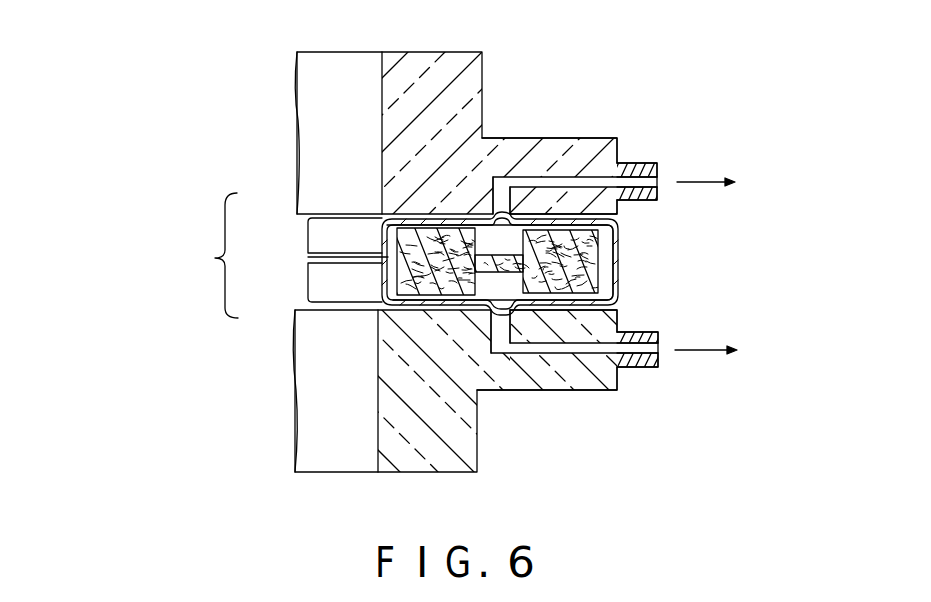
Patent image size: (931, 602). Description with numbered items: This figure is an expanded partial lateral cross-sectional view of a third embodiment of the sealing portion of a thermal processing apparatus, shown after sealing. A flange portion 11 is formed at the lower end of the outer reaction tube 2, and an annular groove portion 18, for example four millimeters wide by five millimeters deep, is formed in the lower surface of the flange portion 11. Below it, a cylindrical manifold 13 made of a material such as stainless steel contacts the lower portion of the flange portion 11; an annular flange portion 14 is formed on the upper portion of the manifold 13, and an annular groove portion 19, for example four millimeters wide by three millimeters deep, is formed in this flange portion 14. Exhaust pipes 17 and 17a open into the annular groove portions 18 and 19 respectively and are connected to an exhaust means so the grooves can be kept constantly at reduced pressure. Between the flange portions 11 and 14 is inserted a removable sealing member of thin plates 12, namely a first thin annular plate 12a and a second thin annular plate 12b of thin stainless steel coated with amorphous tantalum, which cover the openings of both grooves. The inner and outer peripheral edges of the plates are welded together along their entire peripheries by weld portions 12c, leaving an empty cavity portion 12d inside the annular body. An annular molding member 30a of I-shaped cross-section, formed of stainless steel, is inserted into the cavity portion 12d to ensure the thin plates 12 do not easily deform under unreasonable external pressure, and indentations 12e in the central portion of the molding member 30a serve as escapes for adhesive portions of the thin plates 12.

The outer reaction tube 2 is at (483, 67).
The flange portion 11 is at (592, 138).
The thin plates 12 is at (200, 277).
The first thin annular plate 12a is at (308, 225).
The second thin annular plate 12b is at (316, 284).
The weld portion 12c is at (312, 254).
The empty cavity portion 12d is at (606, 243).
The indentations 12e is at (487, 219).
The cylindrical manifold 13 is at (478, 452).
The annular flange portion 14 is at (595, 391).
The exhaust pipe 17 is at (653, 163).
The exhaust pipe 17a is at (649, 368).
The annular groove portion 18 is at (500, 177).
The annular groove portion 19 is at (503, 345).
The annular molding member 30a is at (597, 285).